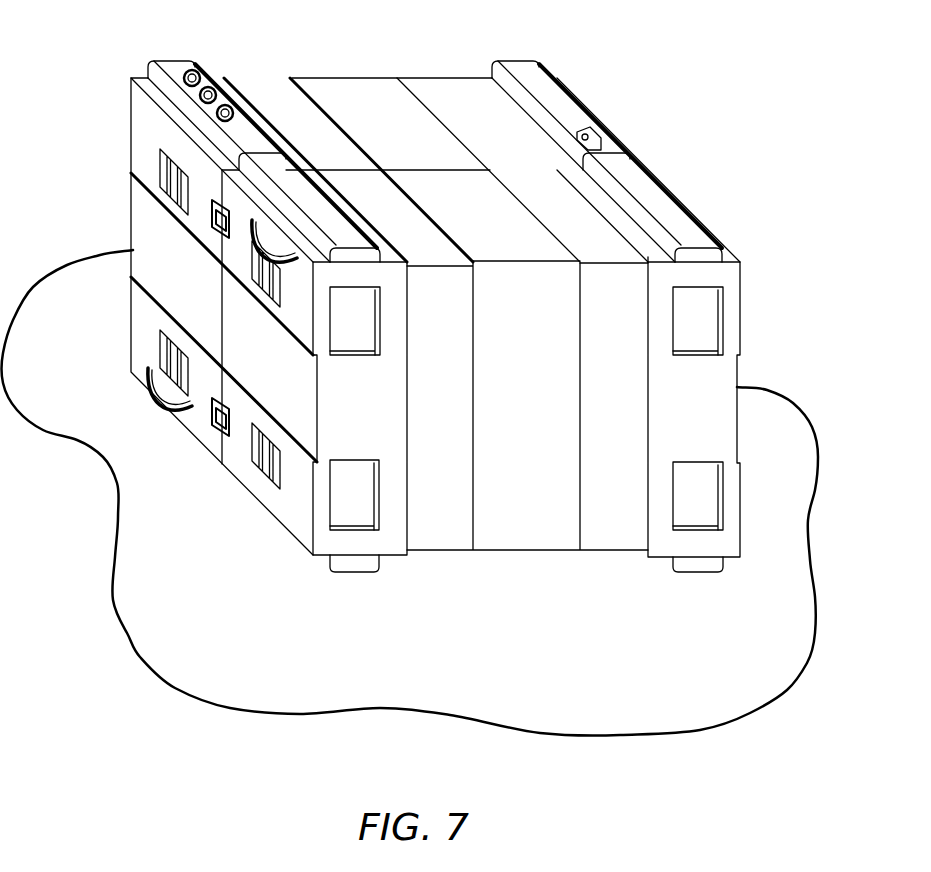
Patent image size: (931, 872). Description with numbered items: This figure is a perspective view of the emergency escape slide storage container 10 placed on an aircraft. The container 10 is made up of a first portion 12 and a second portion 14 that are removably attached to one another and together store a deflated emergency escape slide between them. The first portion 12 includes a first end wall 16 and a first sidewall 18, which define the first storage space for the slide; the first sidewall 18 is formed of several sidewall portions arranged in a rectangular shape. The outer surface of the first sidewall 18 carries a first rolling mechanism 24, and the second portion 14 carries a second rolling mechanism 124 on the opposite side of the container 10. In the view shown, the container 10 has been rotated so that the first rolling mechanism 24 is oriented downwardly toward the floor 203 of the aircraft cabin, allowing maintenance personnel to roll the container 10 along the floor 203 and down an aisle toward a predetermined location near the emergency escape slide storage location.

The emergency escape slide storage container 10 is at (258, 557).
The first portion 12 is at (712, 438).
The second portion 14 is at (346, 76).
The first end wall 16 is at (615, 305).
The first sidewall 18 is at (612, 132).
The first rolling mechanism 24 is at (354, 610).
The second rolling mechanism 124 is at (146, 40).
The floor 203 is at (578, 671).